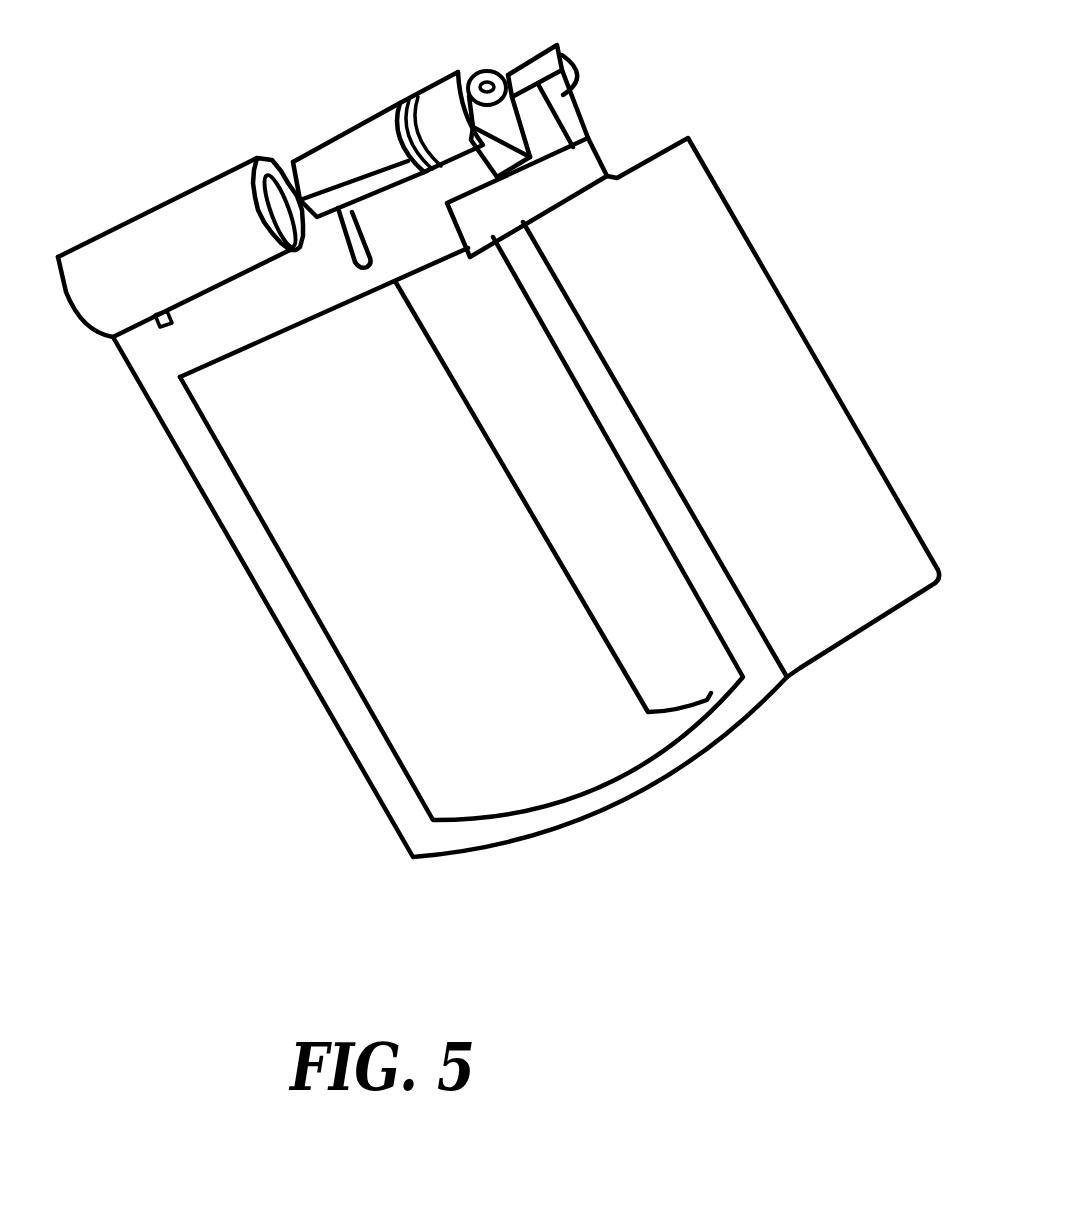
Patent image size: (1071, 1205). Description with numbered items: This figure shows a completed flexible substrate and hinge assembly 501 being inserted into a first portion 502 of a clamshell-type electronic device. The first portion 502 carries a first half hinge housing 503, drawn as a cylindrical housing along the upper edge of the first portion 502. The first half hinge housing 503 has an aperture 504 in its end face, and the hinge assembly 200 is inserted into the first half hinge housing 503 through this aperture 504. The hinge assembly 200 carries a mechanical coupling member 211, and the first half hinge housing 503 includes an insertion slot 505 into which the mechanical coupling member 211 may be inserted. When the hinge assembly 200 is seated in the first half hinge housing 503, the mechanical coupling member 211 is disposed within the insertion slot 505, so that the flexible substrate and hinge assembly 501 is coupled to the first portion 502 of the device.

The hinge assembly 200 is at (388, 100).
The mechanical coupling member 211 is at (346, 245).
The flexible substrate and hinge assembly 501 is at (658, 118).
The first portion 502 is at (243, 527).
The first half hinge housing 503 is at (163, 247).
The aperture 504 is at (279, 187).
The insertion slot 505 is at (158, 322).